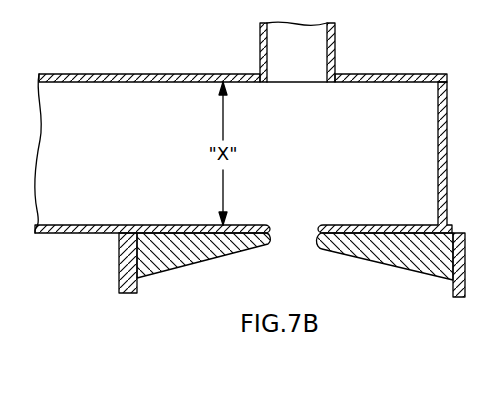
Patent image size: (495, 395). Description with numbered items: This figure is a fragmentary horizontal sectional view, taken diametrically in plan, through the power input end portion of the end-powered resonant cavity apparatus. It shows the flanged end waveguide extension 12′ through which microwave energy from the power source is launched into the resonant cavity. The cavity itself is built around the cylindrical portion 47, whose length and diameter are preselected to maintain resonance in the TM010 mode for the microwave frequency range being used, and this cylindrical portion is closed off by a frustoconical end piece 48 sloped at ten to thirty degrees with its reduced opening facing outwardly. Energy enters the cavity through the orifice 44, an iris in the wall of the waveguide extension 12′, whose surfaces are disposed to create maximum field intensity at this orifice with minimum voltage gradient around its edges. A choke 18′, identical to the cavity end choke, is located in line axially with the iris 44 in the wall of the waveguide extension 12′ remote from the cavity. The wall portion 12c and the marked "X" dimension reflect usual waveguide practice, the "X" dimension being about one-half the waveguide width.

The flanged end waveguide extension 12' is at (243, 133).
The pipe wall 12c is at (213, 62).
The choke 18' is at (325, 51).
The orifice 44 is at (297, 240).
The cylindrical portion 47 is at (119, 260).
The frustoconical end piece 48 is at (418, 253).